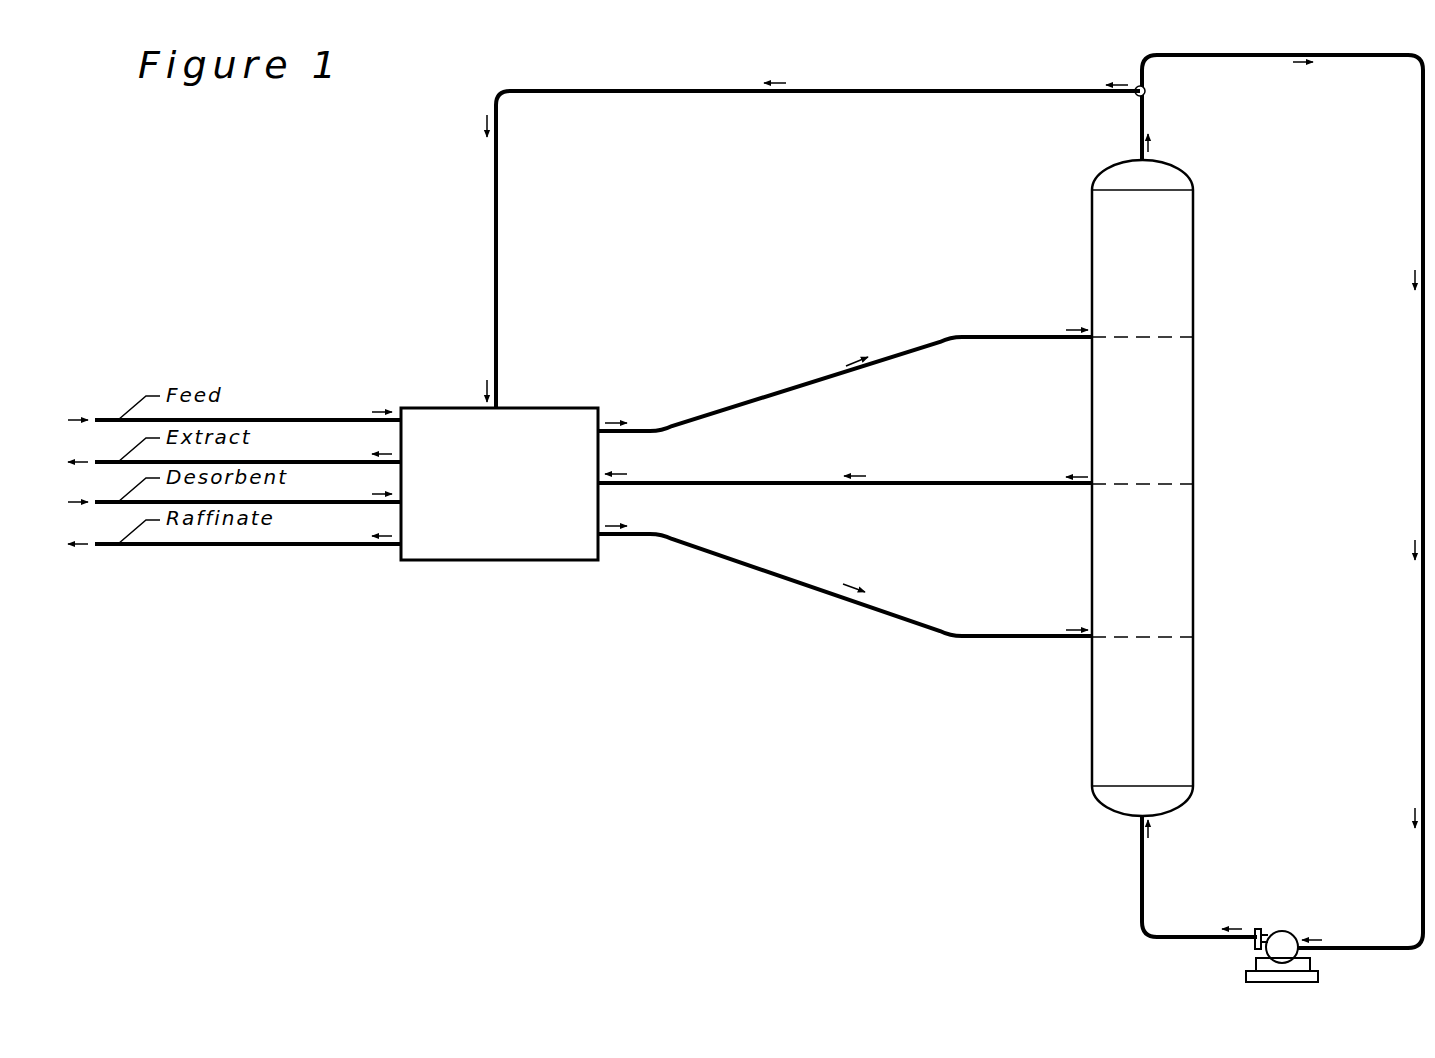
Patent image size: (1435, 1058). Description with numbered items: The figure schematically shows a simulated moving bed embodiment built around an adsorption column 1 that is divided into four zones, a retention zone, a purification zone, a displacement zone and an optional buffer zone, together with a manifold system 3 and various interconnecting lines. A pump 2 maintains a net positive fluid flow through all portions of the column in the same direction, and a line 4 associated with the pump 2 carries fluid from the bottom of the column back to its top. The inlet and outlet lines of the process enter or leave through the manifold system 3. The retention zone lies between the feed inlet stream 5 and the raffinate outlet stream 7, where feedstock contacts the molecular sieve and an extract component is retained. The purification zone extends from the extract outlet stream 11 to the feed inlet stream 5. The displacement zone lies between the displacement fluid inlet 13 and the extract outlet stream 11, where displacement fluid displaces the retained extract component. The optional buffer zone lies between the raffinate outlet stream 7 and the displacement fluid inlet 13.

The adsorption column 1 is at (1198, 293).
The pump 2 is at (1292, 932).
The manifold system 3 is at (512, 562).
The line 4 is at (1140, 138).
The feed inlet stream 5 is at (655, 433).
The raffinate outlet stream 7 is at (1063, 88).
The extract outlet stream 11 is at (655, 485).
The displacement fluid inlet 13 is at (655, 536).